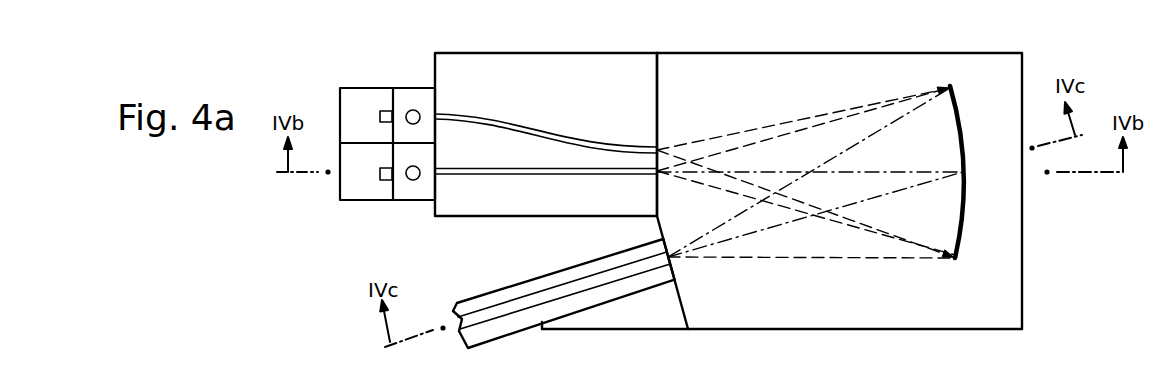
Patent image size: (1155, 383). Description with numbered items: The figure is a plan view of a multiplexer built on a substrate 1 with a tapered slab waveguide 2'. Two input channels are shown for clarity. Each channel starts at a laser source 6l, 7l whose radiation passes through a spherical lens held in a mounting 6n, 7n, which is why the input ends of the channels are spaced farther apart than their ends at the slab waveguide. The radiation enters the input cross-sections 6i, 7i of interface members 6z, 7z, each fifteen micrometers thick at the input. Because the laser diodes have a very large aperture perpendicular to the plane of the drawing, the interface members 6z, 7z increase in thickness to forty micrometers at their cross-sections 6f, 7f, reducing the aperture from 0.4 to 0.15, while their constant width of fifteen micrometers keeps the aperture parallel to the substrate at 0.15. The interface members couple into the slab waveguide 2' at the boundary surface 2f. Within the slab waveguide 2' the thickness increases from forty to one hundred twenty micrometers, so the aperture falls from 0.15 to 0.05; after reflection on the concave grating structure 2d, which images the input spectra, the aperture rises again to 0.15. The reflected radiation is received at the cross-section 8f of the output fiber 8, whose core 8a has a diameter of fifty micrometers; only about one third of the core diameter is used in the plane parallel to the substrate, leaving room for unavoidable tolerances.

The substrate 1 is at (533, 62).
The slab waveguide 2' is at (782, 171).
The boundary surface 2f is at (658, 80).
The grating structure 2d is at (965, 208).
The first light source 6l is at (388, 113).
The mounting of spherical lens 6n is at (413, 110).
The input cross-section 6i is at (440, 112).
The interface member 6z is at (541, 130).
The cross-section 6f is at (661, 145).
The second light source 7l is at (382, 178).
The mounting of spherical lens 7n is at (413, 181).
The input cross-section 7i is at (440, 178).
The interface member 7z is at (537, 175).
The cross-section 7f is at (661, 179).
The output fiber 8 is at (623, 306).
The core 8a is at (513, 308).
The cross-section 8f is at (676, 260).